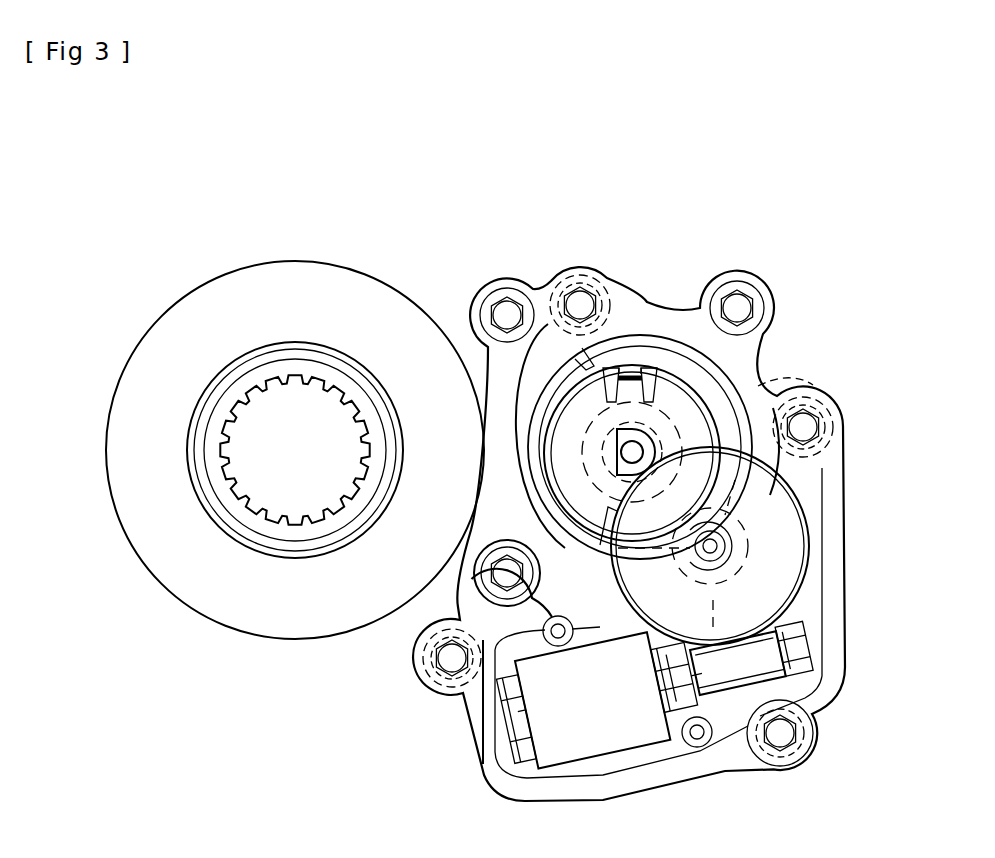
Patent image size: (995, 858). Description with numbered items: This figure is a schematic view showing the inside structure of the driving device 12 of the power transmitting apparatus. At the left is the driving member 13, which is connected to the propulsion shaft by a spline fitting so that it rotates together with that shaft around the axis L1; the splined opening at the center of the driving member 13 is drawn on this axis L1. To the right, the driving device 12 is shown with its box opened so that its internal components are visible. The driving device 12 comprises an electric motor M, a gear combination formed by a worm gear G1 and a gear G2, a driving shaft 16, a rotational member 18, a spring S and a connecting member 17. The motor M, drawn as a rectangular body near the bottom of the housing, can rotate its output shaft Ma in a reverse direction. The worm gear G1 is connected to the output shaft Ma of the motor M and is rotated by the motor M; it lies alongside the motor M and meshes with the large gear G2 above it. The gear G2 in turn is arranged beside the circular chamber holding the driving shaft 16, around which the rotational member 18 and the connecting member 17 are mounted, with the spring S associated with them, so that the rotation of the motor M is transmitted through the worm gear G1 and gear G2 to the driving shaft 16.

The driving device 12 is at (842, 333).
The driving member 13 is at (240, 373).
The axis L1 is at (293, 450).
The driving shaft 16 is at (618, 463).
The connecting member 17 is at (676, 400).
The rotational member 18 is at (636, 353).
The spring S is at (758, 386).
The gear G2 is at (792, 534).
The worm gear G1 is at (767, 673).
The electric motor M is at (617, 737).
The output shaft Ma is at (697, 747).